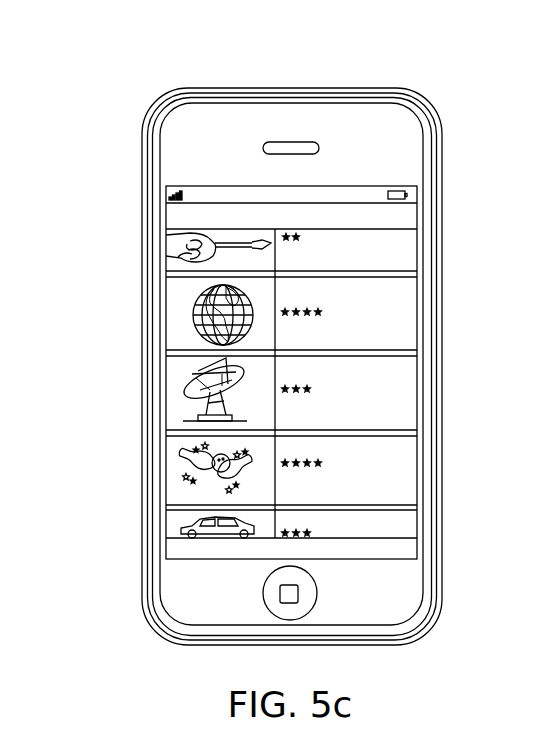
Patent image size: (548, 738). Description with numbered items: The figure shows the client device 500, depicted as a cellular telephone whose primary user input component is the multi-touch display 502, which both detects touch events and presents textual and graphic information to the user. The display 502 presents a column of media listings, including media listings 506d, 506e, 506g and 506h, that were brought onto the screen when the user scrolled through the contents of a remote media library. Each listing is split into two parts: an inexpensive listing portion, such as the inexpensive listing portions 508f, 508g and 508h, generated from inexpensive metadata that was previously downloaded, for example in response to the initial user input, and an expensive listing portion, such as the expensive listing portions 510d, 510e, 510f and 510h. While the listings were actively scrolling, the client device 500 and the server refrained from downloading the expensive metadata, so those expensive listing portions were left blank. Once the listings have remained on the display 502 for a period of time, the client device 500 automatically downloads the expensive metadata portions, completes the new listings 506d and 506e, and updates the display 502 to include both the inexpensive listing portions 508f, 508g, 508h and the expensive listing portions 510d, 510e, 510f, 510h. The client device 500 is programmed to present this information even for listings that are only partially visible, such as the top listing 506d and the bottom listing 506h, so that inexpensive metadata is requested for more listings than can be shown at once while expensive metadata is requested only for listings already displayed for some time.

The client device 500 is at (280, 66).
The display 502 is at (363, 229).
The media listing 506d is at (138, 230).
The media listing 506e is at (241, 319).
The media listing 506g is at (138, 358).
The media listing 506h is at (138, 432).
The inexpensive listing portion 508f is at (400, 404).
The inexpensive listing portion 508g is at (400, 469).
The inexpensive listing portion 508h is at (400, 523).
The expensive listing portion 510d is at (170, 225).
The expensive listing portion 510e is at (173, 342).
The expensive listing portion 510f is at (172, 418).
The expensive listing portion 510h is at (182, 495).